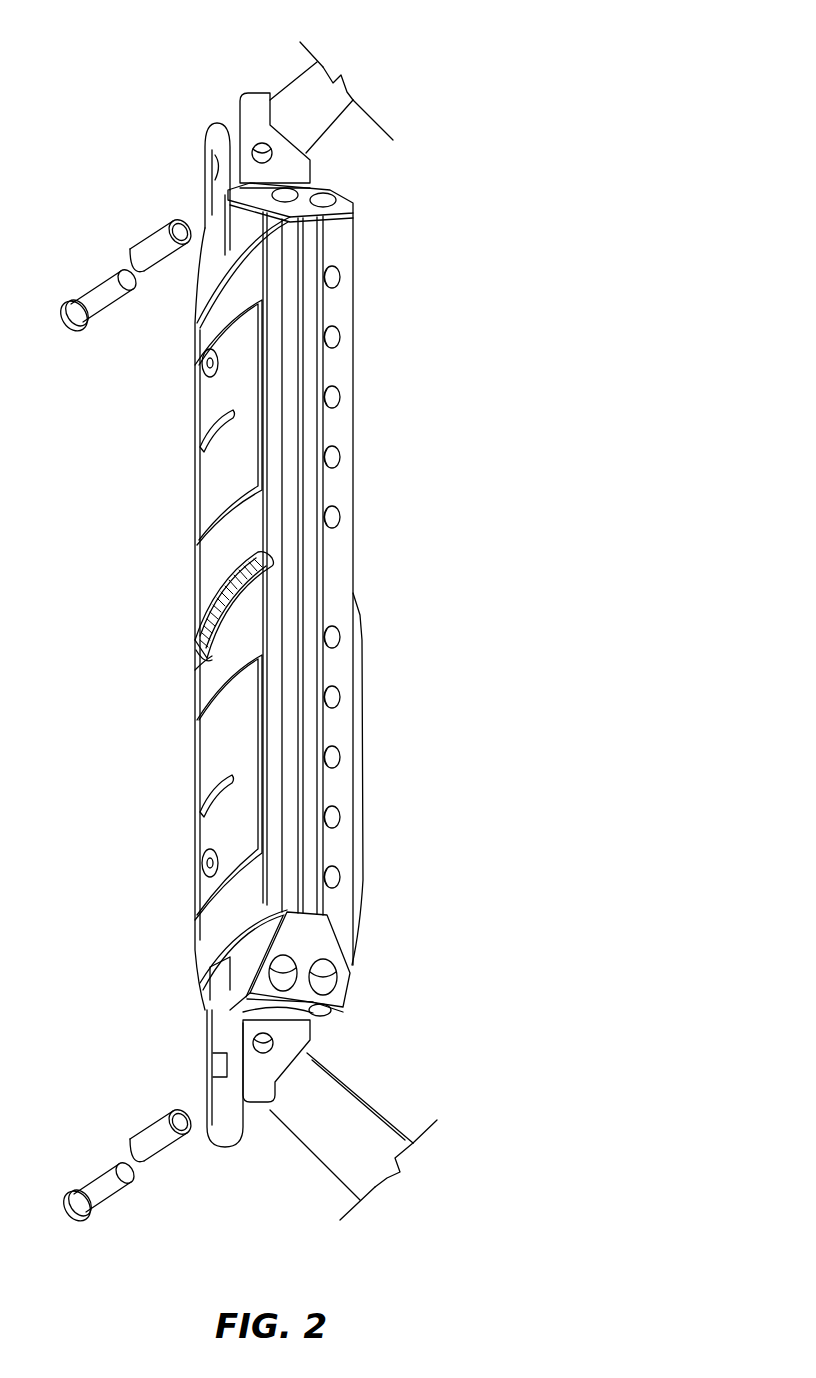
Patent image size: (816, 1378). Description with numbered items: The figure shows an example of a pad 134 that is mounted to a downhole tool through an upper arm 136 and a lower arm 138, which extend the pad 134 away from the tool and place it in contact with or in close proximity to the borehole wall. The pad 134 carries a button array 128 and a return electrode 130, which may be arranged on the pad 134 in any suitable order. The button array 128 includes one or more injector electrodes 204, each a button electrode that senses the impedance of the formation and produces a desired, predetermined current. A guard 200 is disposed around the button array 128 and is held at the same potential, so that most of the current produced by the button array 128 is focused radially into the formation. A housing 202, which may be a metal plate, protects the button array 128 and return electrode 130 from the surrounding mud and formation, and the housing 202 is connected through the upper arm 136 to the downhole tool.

The pad 134 is at (378, 561).
The upper arm 136 is at (323, 82).
The lower arm 138 is at (373, 1123).
The return electrode 130 is at (200, 420).
The housing 202 is at (243, 273).
The button array 128 is at (215, 567).
The injector electrode 204 is at (210, 630).
The guard 200 is at (205, 660).